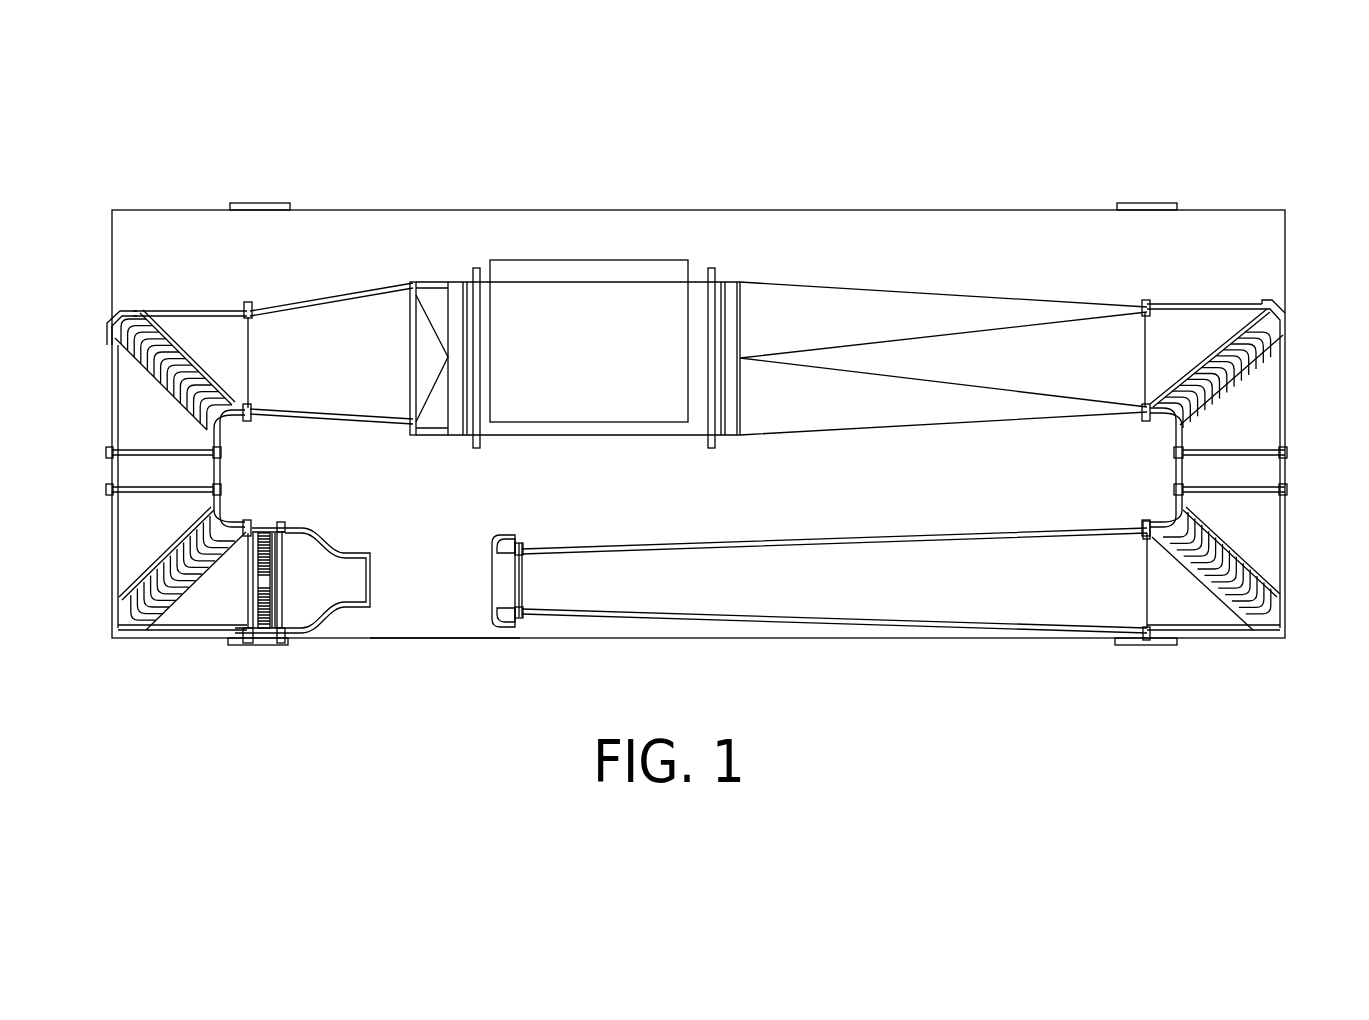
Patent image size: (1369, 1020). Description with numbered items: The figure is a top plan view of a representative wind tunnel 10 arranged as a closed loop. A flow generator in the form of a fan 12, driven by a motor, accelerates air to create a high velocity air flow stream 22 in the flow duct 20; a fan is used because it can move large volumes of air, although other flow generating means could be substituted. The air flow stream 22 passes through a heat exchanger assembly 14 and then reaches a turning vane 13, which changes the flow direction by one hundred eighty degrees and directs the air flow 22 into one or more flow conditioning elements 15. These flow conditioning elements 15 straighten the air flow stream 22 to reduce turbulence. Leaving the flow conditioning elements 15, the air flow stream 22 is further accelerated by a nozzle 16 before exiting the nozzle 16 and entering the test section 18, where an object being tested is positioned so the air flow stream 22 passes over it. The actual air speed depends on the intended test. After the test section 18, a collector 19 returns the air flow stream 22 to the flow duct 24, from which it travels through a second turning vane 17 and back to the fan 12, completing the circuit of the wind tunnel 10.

The wind tunnel 10 is at (326, 152).
The fan 12 is at (615, 262).
The turning vane 13 is at (133, 410).
The heat exchanger assembly 14 is at (433, 300).
The flow conditioning elements 15 is at (263, 628).
The nozzle 16 is at (318, 617).
The turning vane 17 is at (1255, 425).
The test section 18 is at (430, 610).
The collector 19 is at (505, 622).
The flow duct 20 is at (160, 310).
The air flow stream 22 is at (293, 365).
The flow duct 24 is at (602, 600).